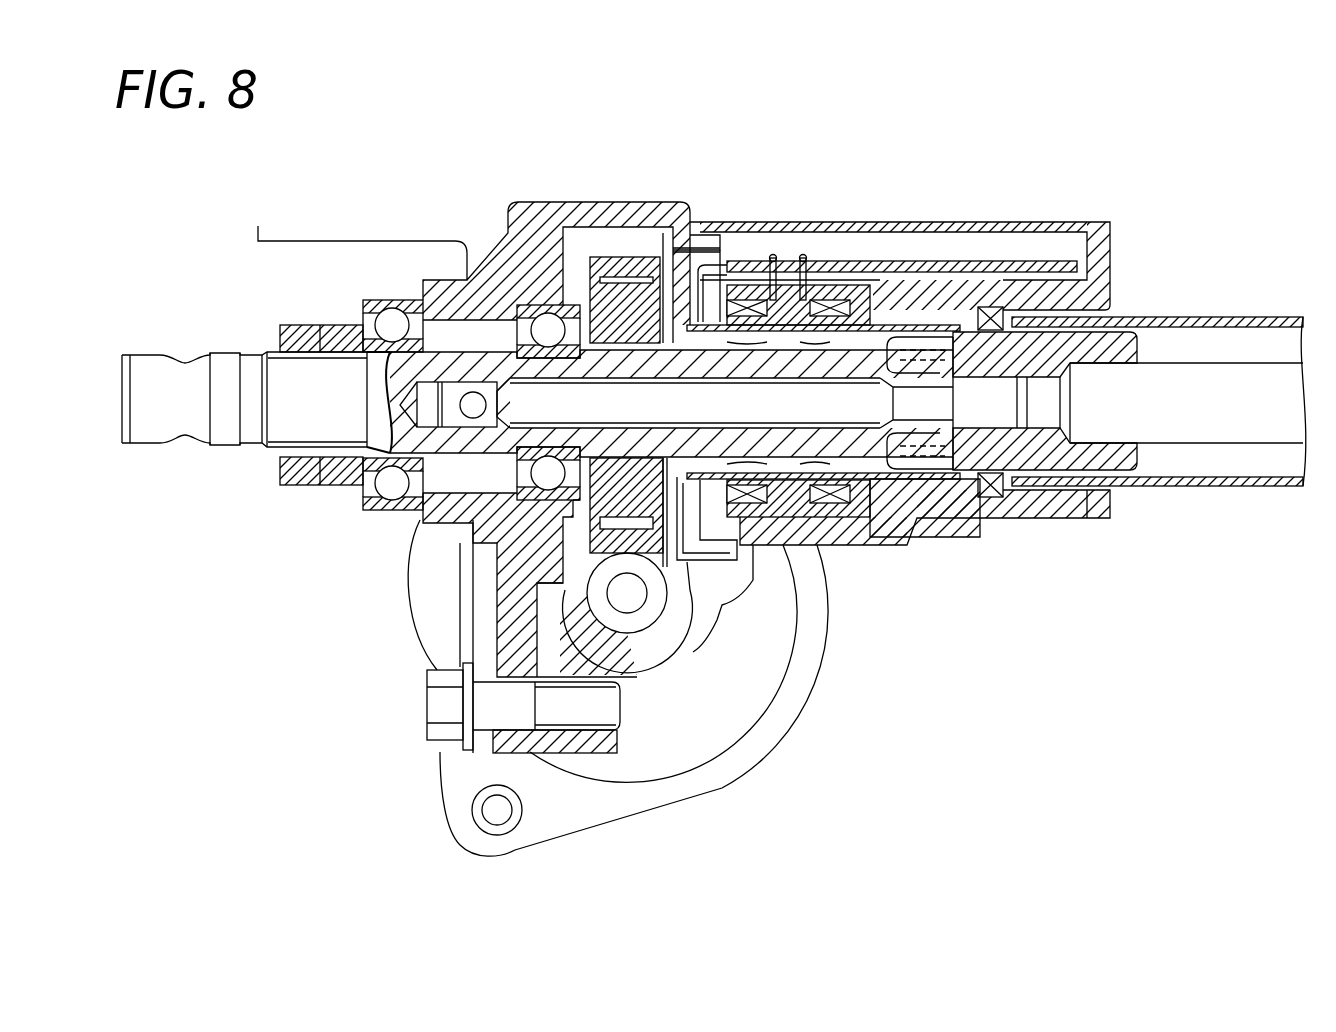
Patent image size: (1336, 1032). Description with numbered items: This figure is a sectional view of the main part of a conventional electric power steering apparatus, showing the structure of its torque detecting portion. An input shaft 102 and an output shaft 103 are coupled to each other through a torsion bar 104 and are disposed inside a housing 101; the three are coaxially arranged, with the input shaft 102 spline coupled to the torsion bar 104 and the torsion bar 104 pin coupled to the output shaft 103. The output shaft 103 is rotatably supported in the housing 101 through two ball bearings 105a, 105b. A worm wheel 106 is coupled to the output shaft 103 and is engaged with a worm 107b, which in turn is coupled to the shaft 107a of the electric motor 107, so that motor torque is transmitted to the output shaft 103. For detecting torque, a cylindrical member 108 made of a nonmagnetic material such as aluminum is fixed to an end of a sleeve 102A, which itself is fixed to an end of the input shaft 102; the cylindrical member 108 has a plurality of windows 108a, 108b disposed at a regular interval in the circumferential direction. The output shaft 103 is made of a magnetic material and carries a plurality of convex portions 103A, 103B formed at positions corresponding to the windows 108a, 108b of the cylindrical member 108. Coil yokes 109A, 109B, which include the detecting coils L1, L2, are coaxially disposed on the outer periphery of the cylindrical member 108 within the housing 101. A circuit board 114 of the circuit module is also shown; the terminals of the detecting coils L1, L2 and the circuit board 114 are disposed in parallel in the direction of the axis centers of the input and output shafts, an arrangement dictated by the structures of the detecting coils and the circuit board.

The housing 101 is at (573, 212).
The input shaft 102 is at (1255, 432).
The sleeve 102A is at (1137, 345).
The output shaft 103 is at (292, 410).
The convex portion 103A is at (713, 242).
The convex portion 103B is at (913, 282).
The torsion bar 104 is at (930, 490).
The ball bearing 105a is at (548, 330).
The ball bearing 105b is at (392, 325).
The worm wheel 106 is at (622, 240).
The electric motor 107 is at (640, 760).
The shaft 107a is at (627, 592).
The worm 107b is at (597, 600).
The cylindrical member 108 is at (933, 282).
The window 108a is at (757, 282).
The window 108b is at (840, 282).
The coil yoke 109A is at (747, 542).
The coil yoke 109B is at (870, 512).
The circuit board 114 is at (1013, 272).
The detecting coil L1 is at (800, 549).
The detecting coil L2 is at (833, 509).